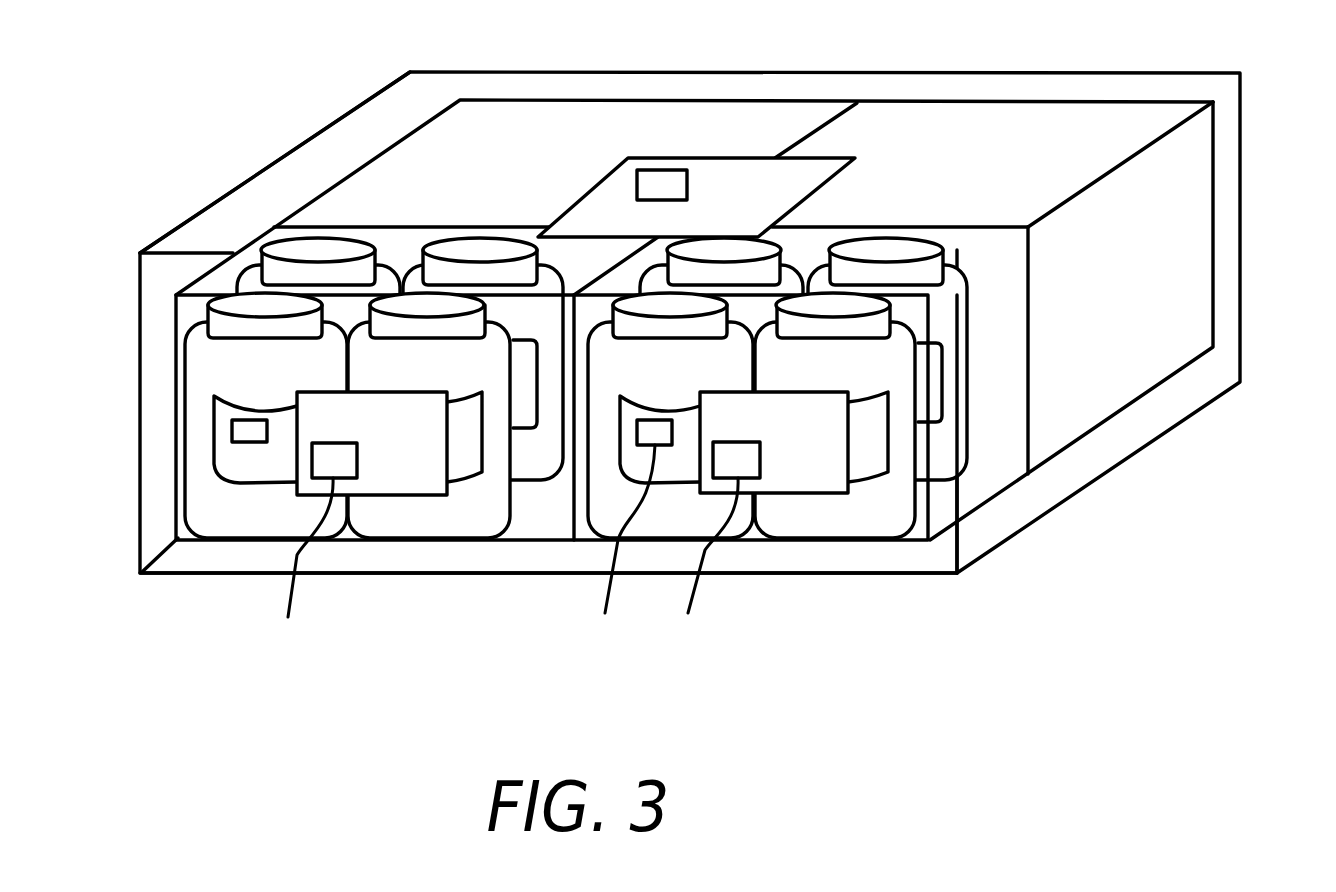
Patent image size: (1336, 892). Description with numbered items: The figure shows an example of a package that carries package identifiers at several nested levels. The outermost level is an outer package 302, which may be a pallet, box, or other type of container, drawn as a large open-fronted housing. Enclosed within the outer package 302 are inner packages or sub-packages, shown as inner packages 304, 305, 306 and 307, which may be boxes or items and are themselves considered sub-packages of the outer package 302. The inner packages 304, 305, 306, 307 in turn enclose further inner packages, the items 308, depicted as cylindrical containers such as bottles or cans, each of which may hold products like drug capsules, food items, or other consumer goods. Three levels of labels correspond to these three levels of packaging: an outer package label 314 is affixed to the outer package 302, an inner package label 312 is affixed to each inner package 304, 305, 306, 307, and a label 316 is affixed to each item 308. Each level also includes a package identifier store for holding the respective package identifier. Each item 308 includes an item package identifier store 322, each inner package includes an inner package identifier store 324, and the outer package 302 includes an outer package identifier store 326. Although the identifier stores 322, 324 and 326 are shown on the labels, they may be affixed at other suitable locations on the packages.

The outer package 302 is at (320, 158).
The inner package 304 is at (1133, 375).
The inner package 305 is at (988, 465).
The inner package 306 is at (183, 547).
The inner package 307 is at (437, 157).
The item 308 is at (177, 347).
The inner package label 312 is at (343, 437).
The outer package label 314 is at (836, 172).
The label 316 is at (213, 402).
The item package identifier store 322 is at (230, 428).
The inner package identifier store 324 is at (510, 550).
The outer package identifier store 326 is at (633, 185).